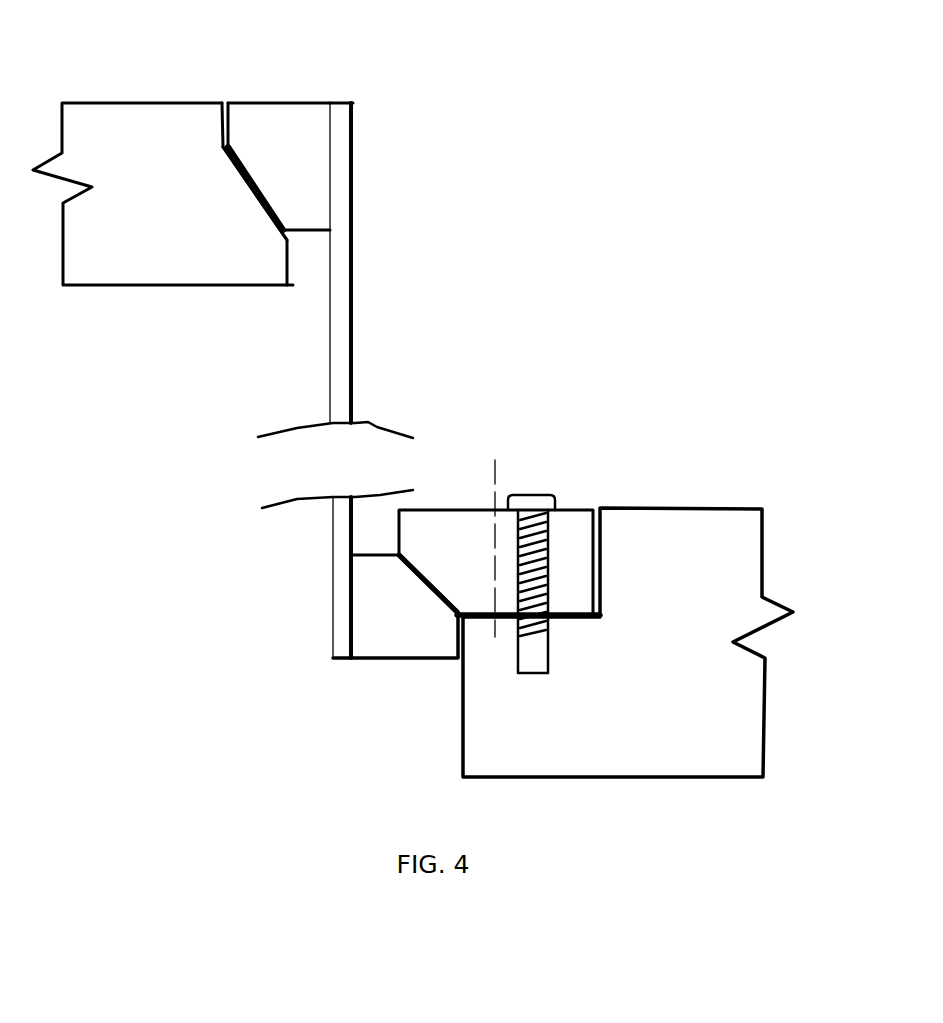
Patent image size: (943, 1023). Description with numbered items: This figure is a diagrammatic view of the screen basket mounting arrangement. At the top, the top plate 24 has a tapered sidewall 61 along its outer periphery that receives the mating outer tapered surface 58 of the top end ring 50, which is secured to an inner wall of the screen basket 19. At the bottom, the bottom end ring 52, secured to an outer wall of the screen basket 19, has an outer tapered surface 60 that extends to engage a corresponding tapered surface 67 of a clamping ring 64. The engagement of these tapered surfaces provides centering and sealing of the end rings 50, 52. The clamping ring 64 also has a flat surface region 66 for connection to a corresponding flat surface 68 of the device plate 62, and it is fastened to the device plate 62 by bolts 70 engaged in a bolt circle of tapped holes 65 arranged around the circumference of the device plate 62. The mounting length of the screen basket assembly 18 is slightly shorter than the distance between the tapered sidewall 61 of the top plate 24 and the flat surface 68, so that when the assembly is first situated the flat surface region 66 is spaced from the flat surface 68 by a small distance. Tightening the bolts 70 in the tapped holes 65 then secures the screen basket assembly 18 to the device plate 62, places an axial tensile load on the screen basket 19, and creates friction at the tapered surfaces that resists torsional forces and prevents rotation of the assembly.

The screen basket assembly 18 is at (346, 353).
The screen basket 19 is at (362, 155).
The top plate 24 is at (95, 92).
The top end ring 50 is at (275, 92).
The bottom end ring 52 is at (389, 675).
The outer tapered surface 58 is at (330, 188).
The outer tapered surface 60 is at (415, 586).
The tapered sidewall 61 is at (246, 204).
The device plate 62 is at (780, 661).
The clamping ring 64 is at (468, 512).
The tapped holes 65 is at (551, 637).
The flat surface region 66 is at (578, 603).
The tapered surface 67 is at (419, 560).
The flat surface 68 is at (580, 628).
The bolts 70 is at (557, 502).